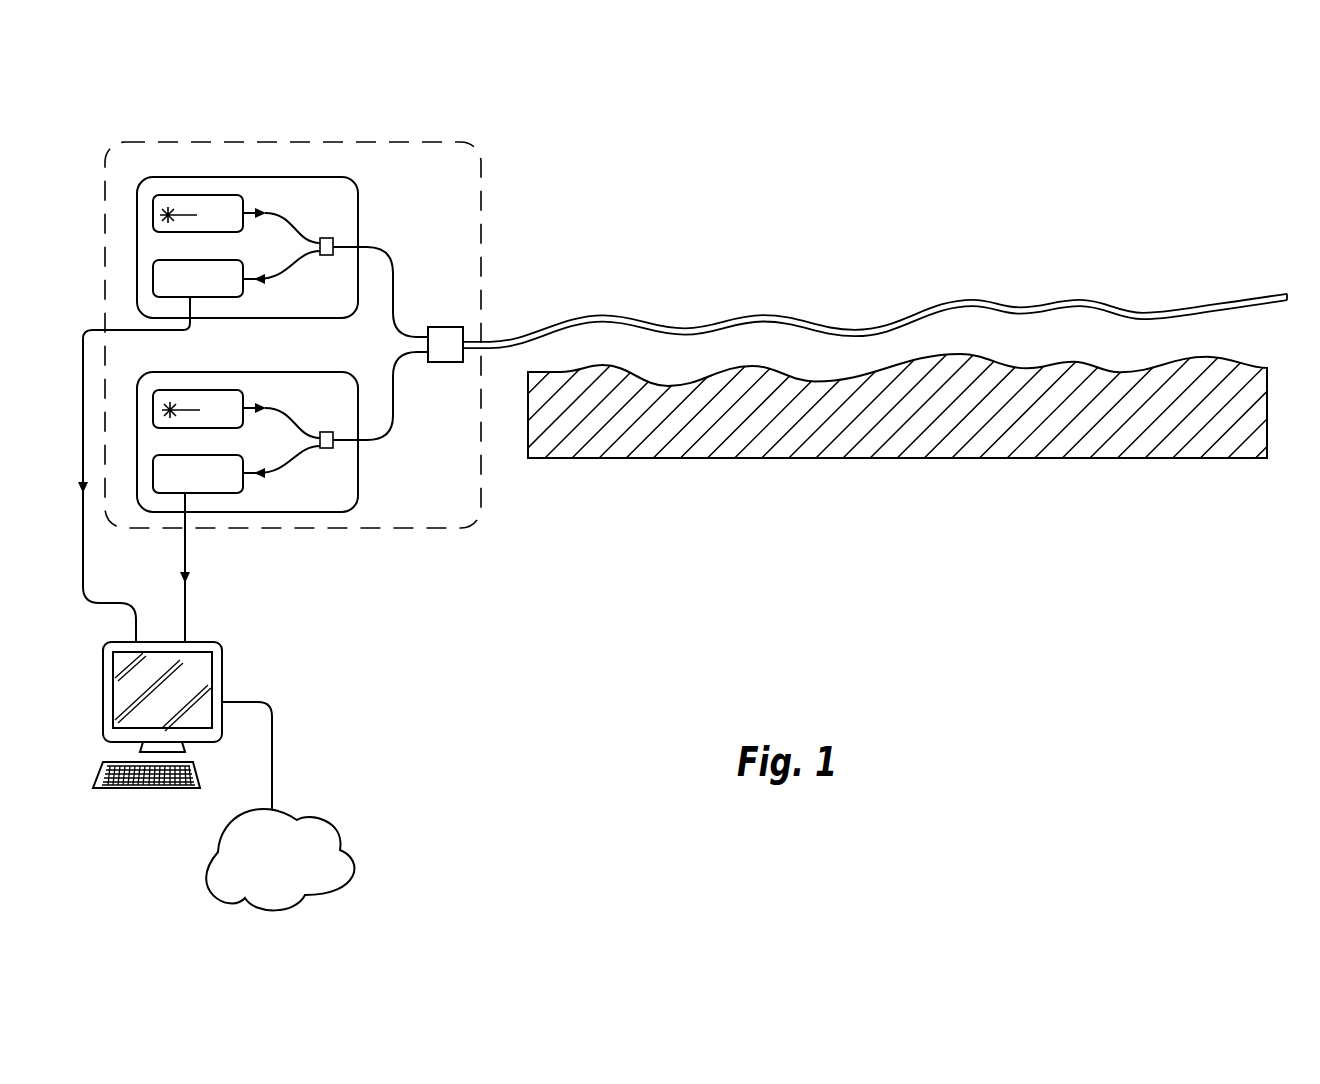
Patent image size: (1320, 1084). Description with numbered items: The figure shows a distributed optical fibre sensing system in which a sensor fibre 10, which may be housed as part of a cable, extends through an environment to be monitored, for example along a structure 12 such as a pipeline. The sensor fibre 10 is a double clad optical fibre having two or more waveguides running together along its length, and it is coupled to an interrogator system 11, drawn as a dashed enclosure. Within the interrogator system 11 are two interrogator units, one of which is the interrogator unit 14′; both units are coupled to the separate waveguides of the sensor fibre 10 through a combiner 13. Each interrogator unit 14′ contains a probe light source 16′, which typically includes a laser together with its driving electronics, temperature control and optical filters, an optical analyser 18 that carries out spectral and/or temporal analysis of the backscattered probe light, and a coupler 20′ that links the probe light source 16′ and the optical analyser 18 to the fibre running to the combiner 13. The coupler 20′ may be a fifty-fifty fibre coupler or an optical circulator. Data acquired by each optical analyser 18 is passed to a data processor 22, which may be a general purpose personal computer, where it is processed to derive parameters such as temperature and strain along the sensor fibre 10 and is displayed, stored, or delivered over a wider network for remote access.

The sensor fibre 10 is at (620, 315).
The interrogator system 11 is at (476, 148).
The structure 12 is at (867, 438).
The combiner 13 is at (437, 327).
The interrogator unit 14′ is at (320, 177).
The probe light source 16′ is at (177, 195).
The optical analyser 18 is at (230, 300).
The coupler 20′ is at (327, 238).
The data processor 22 is at (221, 650).